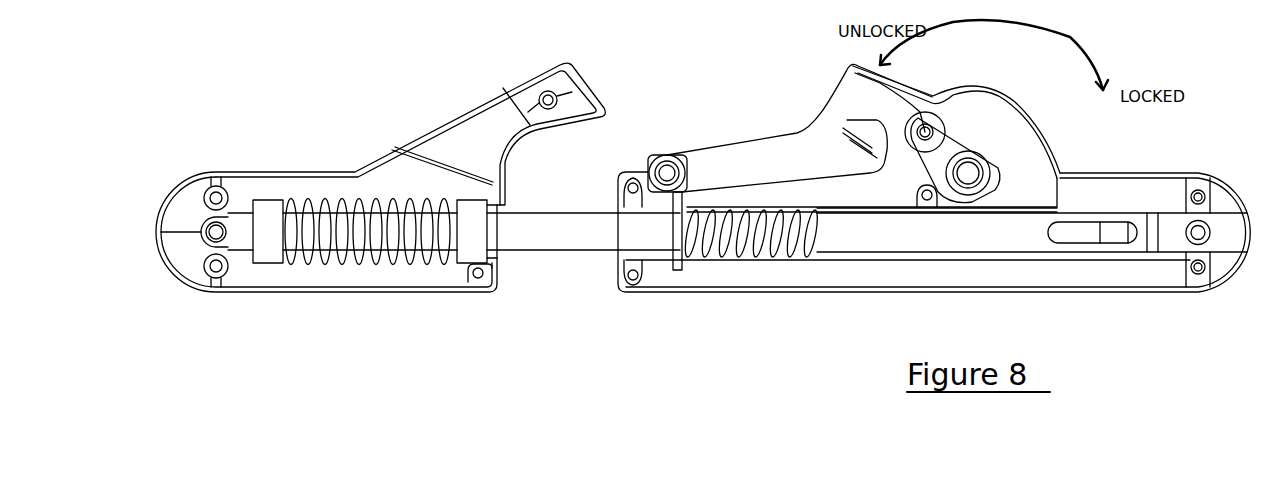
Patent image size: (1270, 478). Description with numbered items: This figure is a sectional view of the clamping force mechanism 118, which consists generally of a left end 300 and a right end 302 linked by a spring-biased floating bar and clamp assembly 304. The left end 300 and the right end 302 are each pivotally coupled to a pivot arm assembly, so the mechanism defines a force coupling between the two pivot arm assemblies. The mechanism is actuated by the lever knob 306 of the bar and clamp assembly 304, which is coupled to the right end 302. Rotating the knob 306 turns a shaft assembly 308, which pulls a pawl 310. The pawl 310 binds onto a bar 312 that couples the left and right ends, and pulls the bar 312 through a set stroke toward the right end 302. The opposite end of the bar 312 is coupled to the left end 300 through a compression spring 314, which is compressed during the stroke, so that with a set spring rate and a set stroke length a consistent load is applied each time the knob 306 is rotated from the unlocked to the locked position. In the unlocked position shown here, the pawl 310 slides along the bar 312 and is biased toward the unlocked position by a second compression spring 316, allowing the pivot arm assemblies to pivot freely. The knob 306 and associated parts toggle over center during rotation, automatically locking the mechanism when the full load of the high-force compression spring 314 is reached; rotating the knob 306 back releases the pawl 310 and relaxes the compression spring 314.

The clamping force mechanism 118 is at (677, 342).
The left end 300 is at (273, 297).
The right end 302 is at (1147, 303).
The bar and clamp assembly 304 is at (547, 263).
The lever knob 306 is at (957, 88).
The shaft assembly 308 is at (793, 150).
The pawl 310 is at (675, 267).
The bar 312 is at (560, 220).
The compression spring 314 is at (353, 263).
The compression spring 316 is at (740, 253).